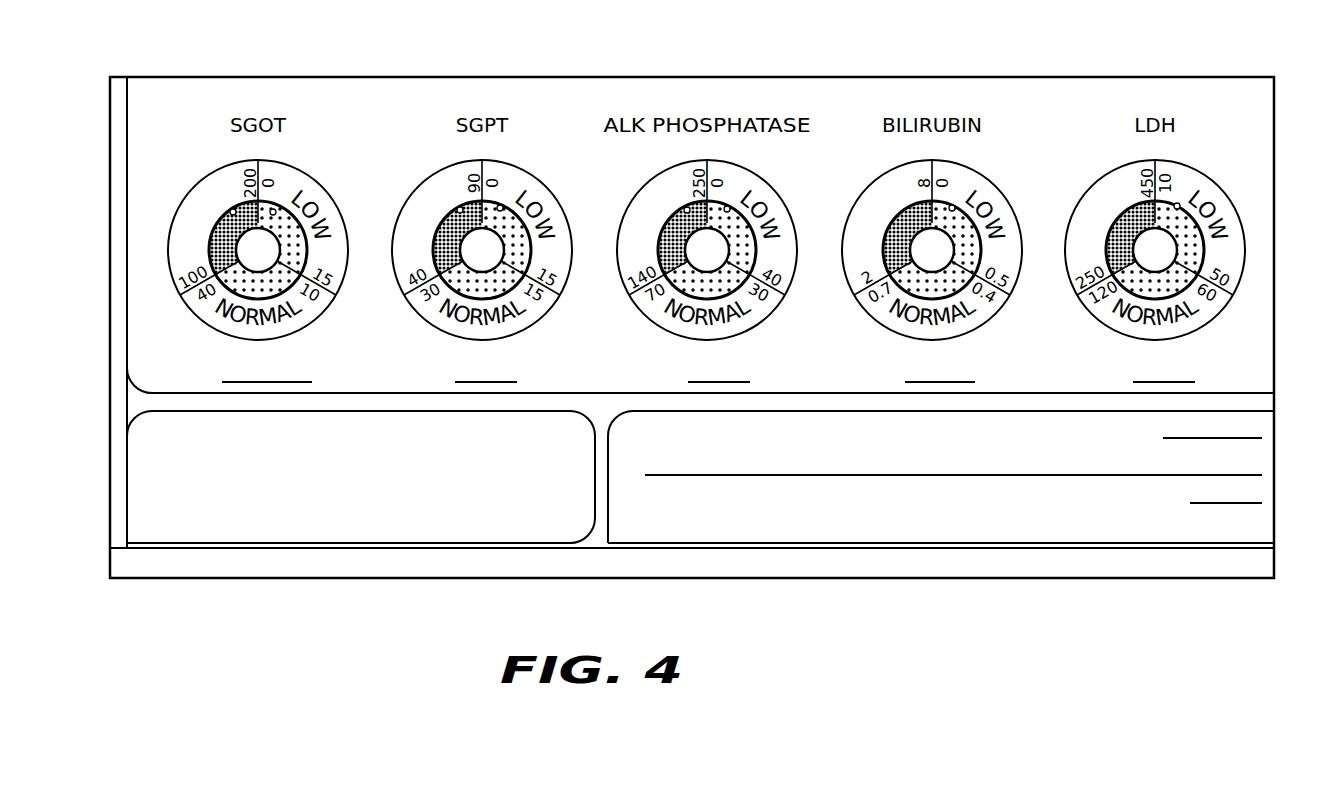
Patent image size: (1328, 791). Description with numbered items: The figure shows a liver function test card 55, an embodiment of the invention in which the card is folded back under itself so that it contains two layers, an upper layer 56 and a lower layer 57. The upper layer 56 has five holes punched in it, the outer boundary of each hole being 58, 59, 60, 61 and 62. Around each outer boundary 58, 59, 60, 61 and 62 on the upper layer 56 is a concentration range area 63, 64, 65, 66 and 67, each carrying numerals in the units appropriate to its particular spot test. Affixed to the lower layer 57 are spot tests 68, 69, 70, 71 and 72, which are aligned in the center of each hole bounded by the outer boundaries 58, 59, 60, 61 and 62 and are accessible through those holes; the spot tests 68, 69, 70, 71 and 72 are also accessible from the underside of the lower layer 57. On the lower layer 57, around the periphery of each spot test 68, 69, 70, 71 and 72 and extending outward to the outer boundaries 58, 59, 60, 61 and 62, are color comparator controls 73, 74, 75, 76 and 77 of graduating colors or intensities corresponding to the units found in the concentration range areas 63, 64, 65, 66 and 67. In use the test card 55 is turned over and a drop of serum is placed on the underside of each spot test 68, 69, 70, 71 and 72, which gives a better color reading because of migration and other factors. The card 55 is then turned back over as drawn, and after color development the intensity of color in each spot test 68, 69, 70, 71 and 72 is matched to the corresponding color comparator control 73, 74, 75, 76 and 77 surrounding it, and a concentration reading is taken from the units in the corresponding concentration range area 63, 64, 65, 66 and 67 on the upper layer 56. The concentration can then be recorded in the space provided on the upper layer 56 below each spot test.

The liver function test card 55 is at (470, 77).
The upper layer 56 is at (875, 530).
The lower layer 57 is at (1048, 567).
The outer boundary of hole 58 is at (208, 201).
The concentration range area 63 is at (190, 195).
The color comparator control 73 is at (303, 184).
The spot test 68 is at (258, 250).
The color comparator control 74 is at (440, 198).
The concentration range area 64 is at (421, 193).
The outer boundary of hole 59 is at (529, 180).
The spot test 69 is at (482, 250).
The color comparator control 75 is at (659, 206).
The concentration range area 65 is at (639, 199).
The outer boundary of hole 60 is at (769, 186).
The spot test 70 is at (707, 250).
The concentration range area 66 is at (874, 189).
The outer boundary of hole 61 is at (995, 187).
The color comparator control 76 is at (865, 251).
The spot test 71 is at (932, 250).
The concentration range area 67 is at (1100, 188).
The outer boundary of hole 62 is at (1215, 183).
The color comparator control 77 is at (1215, 246).
The spot test 72 is at (1155, 250).